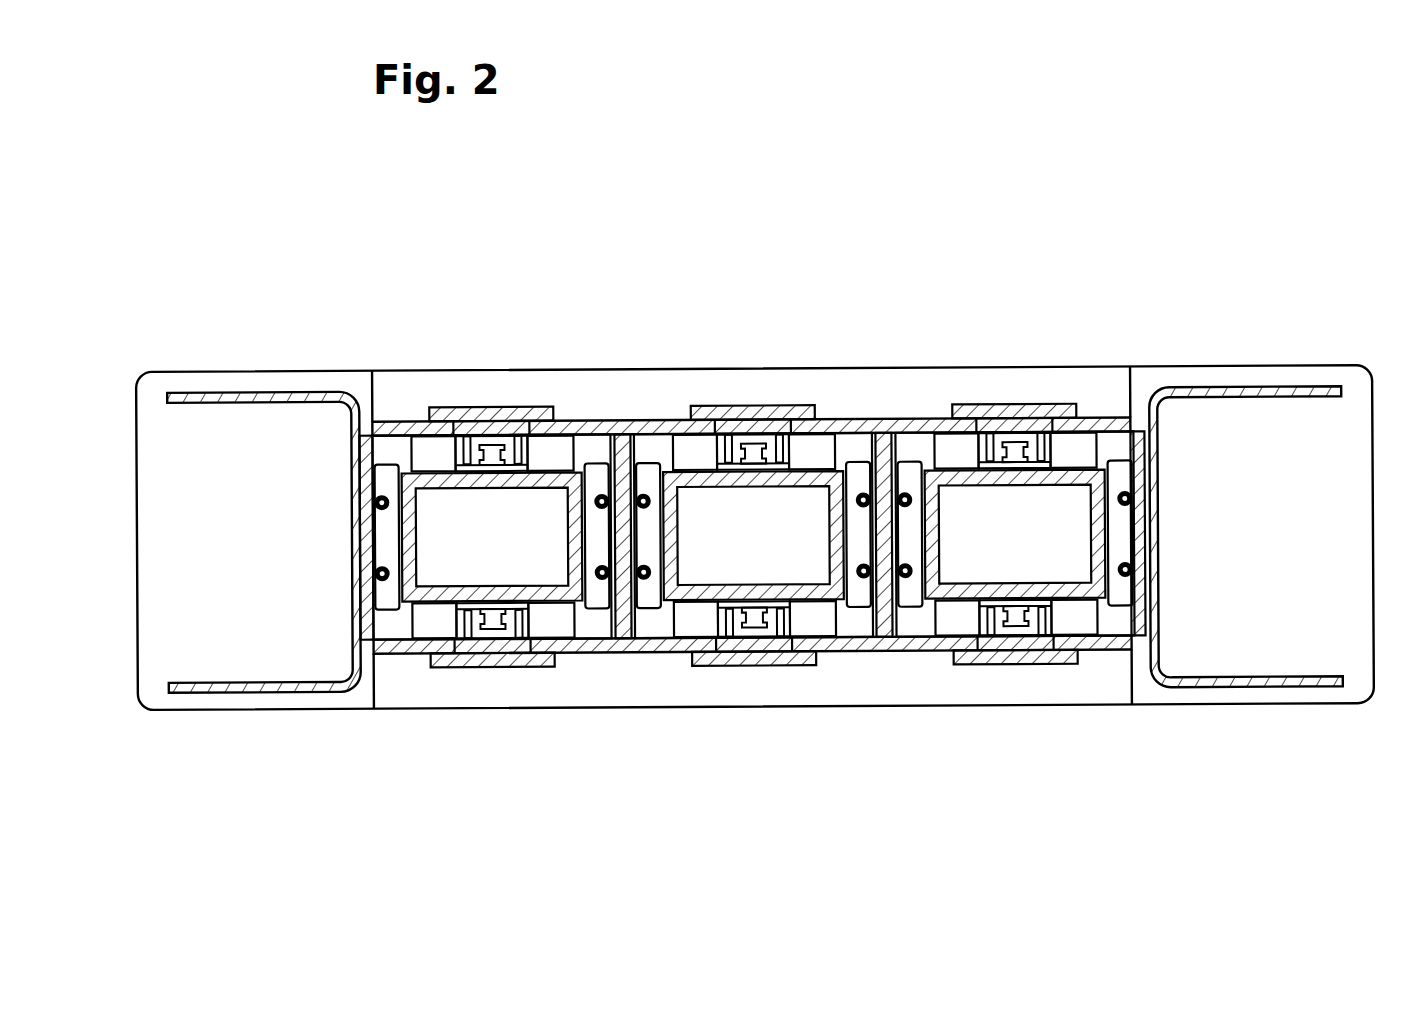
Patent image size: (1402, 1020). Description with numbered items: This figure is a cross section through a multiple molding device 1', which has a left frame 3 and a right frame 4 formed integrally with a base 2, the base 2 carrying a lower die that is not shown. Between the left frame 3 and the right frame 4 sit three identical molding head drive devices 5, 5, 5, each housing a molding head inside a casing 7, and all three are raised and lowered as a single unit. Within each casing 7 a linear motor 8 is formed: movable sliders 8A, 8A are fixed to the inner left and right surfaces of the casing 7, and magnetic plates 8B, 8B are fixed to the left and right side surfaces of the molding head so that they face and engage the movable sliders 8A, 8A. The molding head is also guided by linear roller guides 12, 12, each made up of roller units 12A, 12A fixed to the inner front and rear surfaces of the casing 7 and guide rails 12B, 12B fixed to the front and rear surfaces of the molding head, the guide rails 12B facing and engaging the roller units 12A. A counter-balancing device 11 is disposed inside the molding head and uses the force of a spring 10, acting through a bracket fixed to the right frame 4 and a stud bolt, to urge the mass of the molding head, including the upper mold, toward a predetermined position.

The multiple molding device 1' is at (755, 473).
The base 2 is at (862, 688).
The left frame 3 is at (202, 390).
The right frame 4 is at (1277, 385).
The molding head drive device 5 is at (1008, 394).
The casing 7 is at (1110, 430).
The linear motor 8 is at (800, 792).
The movable slider 8A is at (602, 602).
The magnetic plate 8B is at (589, 615).
The spring 10 is at (362, 613).
The counter-balancing device 11 is at (375, 580).
The linear roller guide 12 is at (623, 792).
The roller unit 12A is at (475, 641).
The guide rail 12B is at (497, 641).